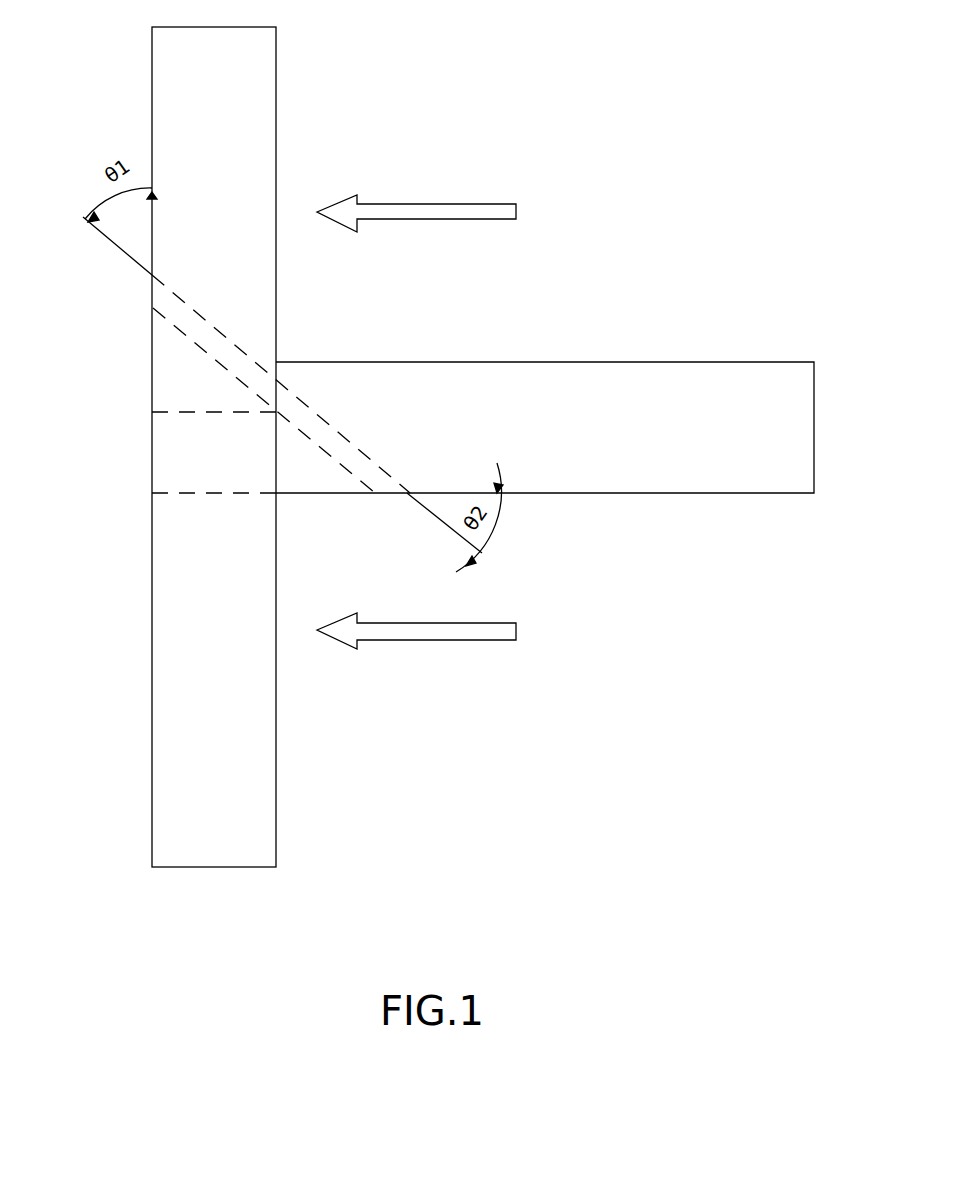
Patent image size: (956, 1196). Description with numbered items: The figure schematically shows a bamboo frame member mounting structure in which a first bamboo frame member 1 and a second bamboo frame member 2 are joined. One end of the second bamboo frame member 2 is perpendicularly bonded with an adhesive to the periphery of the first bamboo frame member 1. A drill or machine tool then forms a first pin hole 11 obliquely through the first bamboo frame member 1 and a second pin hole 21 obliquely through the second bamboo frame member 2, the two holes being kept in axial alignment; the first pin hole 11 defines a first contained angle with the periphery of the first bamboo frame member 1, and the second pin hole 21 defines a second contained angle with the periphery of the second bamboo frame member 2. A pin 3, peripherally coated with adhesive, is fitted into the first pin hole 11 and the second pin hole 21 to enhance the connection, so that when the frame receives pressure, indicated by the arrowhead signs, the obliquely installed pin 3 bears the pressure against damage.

The first bamboo frame member 1 is at (185, 185).
The second bamboo frame member 2 is at (606, 388).
The pin 3 is at (193, 328).
The first pin hole 11 is at (220, 335).
The second pin hole 21 is at (333, 465).